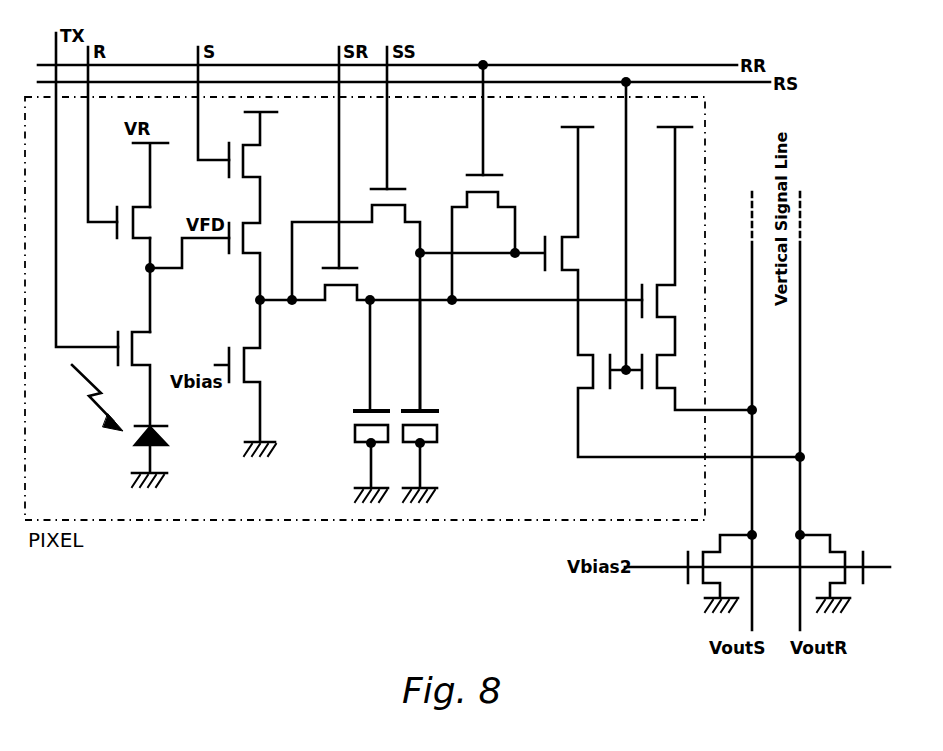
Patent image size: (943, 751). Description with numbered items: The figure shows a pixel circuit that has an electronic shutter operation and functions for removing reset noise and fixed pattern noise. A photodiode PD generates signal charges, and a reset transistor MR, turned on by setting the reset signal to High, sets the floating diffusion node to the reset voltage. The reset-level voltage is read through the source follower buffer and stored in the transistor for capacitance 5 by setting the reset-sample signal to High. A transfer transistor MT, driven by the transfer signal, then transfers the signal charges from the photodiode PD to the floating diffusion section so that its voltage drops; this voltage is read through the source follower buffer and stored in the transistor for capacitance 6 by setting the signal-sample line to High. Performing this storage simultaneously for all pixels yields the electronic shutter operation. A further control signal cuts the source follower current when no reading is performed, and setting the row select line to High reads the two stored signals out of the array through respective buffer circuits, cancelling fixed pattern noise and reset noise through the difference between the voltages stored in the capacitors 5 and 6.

The transistor for capacitance 5 is at (338, 442).
The transistor for capacitance 6 is at (402, 457).
The reset transistor MR is at (128, 210).
The transfer transistor MT is at (126, 360).
The photodiode PD is at (137, 456).